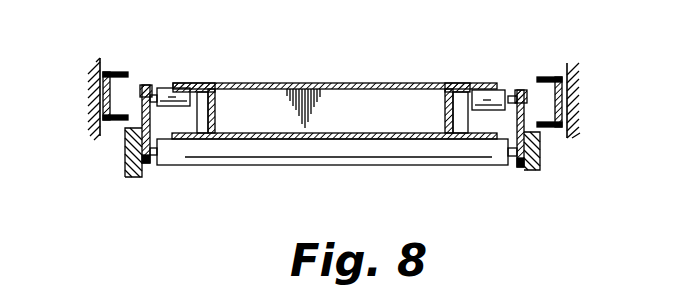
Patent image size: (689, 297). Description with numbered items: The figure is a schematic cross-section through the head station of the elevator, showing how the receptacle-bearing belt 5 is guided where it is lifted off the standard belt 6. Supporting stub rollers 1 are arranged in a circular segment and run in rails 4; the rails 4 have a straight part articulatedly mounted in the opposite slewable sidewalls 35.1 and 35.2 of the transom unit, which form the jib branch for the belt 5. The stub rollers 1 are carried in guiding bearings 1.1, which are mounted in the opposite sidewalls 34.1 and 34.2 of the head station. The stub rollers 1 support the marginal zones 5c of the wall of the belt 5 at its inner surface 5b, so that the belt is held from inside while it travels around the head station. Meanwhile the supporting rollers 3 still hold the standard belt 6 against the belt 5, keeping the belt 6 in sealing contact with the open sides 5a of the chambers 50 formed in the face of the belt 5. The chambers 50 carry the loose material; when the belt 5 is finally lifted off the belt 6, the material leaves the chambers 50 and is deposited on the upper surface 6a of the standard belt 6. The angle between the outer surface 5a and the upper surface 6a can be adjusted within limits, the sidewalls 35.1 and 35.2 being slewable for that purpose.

The supporting stub roller 1 is at (168, 88).
The guiding bearing 1.1 is at (145, 89).
The supporting roller 3 is at (180, 150).
The rail 4 is at (119, 72).
The receptacle-bearing belt 5 is at (248, 80).
The outer surface 5a is at (351, 140).
The inner surface 5b is at (310, 83).
The marginal zone 5c is at (476, 84).
The standard belt 6 is at (228, 142).
The upper surface 6a is at (272, 130).
The chamber 50 is at (375, 100).
The sidewall of the head station 34.1 is at (130, 151).
The sidewall of the head station 34.2 is at (528, 160).
The slewable sidewall 35.1 is at (93, 98).
The slewable sidewall 35.2 is at (572, 102).